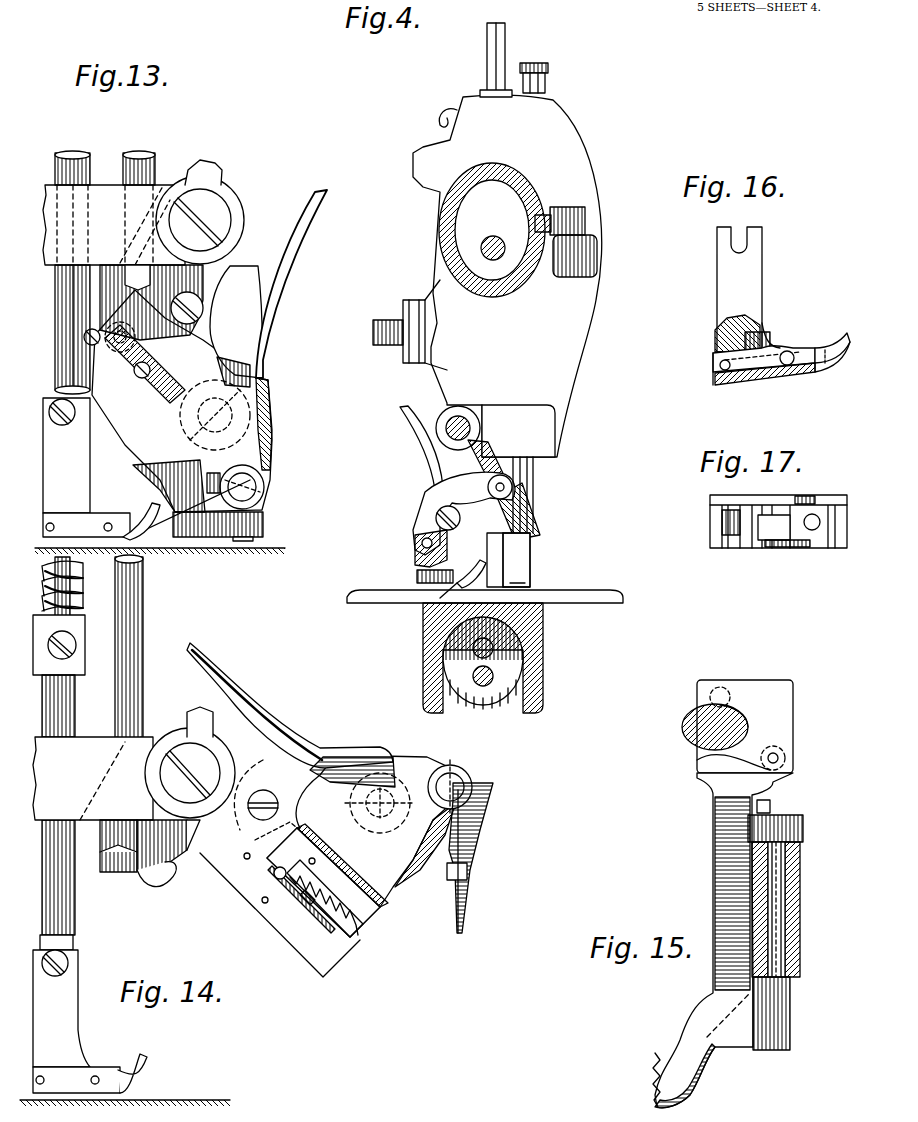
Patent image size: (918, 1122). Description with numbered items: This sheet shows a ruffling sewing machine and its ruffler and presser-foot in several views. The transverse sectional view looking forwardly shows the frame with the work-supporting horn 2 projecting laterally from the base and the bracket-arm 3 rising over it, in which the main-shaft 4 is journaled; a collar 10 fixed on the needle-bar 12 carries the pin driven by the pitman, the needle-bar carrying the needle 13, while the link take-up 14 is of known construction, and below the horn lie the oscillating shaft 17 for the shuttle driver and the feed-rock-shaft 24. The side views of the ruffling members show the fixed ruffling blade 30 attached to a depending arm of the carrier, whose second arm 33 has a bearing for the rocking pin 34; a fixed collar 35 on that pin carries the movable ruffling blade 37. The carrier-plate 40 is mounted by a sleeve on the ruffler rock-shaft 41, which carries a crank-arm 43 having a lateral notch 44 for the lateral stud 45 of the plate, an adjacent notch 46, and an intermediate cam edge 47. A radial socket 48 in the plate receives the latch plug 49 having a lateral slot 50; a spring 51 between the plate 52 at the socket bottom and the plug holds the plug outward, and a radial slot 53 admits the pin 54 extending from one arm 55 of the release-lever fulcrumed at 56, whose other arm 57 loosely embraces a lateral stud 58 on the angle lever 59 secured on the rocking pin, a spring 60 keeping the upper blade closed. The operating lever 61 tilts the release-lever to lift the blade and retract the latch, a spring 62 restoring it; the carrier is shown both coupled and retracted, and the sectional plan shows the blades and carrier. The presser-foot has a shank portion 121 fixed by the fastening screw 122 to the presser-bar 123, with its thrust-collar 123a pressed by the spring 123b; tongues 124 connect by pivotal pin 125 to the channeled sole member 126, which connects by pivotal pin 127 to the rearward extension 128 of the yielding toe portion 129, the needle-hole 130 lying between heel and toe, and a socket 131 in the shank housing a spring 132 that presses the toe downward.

In FIG. 4, the work-supporting horn 2 is at (545, 640).
In FIG. 4, the bracket-arm 3 is at (512, 172).
In FIG. 4, the main-shaft 4 is at (494, 236).
In FIG. 13, the collar 10 is at (182, 401).
In FIG. 14, the collar 10 is at (334, 831).
In FIG. 13, the needle-bar 12 is at (150, 163).
In FIG. 14, the needle-bar 12 is at (143, 645).
In FIG. 4, the needle-bar 12 is at (481, 60).
In FIG. 13, the needle 13 is at (203, 286).
In FIG. 4, the needle 13 is at (508, 560).
In FIG. 4, the link take-up 14 is at (436, 106).
In FIG. 4, the oscillating shaft 17 is at (494, 650).
In FIG. 4, the feed-rock-shaft 24 is at (494, 677).
In FIG. 13, the fixed ruffling blade 30 is at (163, 538).
In FIG. 14, the fixed ruffling blade 30 is at (478, 890).
In FIG. 4, the fixed ruffling blade 30 is at (447, 603).
In FIG. 15, the fixed ruffling blade 30 is at (713, 895).
In FIG. 15, the second arm 33 is at (798, 885).
In FIG. 15, the rocking pin 34 is at (798, 933).
In FIG. 15, the fixed collar 35 is at (773, 1050).
In FIG. 13, the movable ruffling blade 37 is at (158, 503).
In FIG. 14, the movable ruffling blade 37 is at (457, 910).
In FIG. 4, the movable ruffling blade 37 is at (473, 570).
In FIG. 15, the movable ruffling blade 37 is at (682, 728).
In FIG. 4, the carrier-plate 40 is at (497, 490).
In FIG. 4, the ruffler rock-shaft 41 is at (463, 416).
In FIG. 13, the crank-arm 43 is at (216, 326).
In FIG. 14, the crank-arm 43 is at (100, 860).
In FIG. 14, the lateral notch 44 is at (182, 847).
In FIG. 14, the lateral stud 45 is at (280, 805).
In FIG. 14, the notch 46 is at (130, 870).
In FIG. 14, the cam edge 47 is at (155, 890).
In FIG. 14, the radial socket 48 is at (300, 945).
In FIG. 13, the latch plug 49 is at (130, 340).
In FIG. 14, the latch plug 49 is at (270, 855).
In FIG. 13, the lateral slot 50 is at (117, 323).
In FIG. 14, the lateral slot 50 is at (274, 874).
In FIG. 14, the spring 51 is at (265, 880).
In FIG. 14, the plate 52 is at (372, 925).
In FIG. 4, the radial slot 53 is at (553, 495).
In FIG. 13, the pin 54 is at (145, 364).
In FIG. 4, the pin 54 is at (546, 495).
In FIG. 4, the arm 55 is at (464, 513).
In FIG. 4, the fulcrum 56 is at (416, 529).
In FIG. 4, the arm 57 is at (420, 528).
In FIG. 4, the lateral stud 58 is at (422, 546).
In FIG. 15, the lateral stud 58 is at (772, 806).
In FIG. 13, the angle lever 59 is at (262, 494).
In FIG. 14, the angle lever 59 is at (450, 787).
In FIG. 15, the angle lever 59 is at (787, 826).
In FIG. 13, the spring 60 is at (218, 485).
In FIG. 13, the operating lever 61 is at (270, 298).
In FIG. 14, the operating lever 61 is at (258, 722).
In FIG. 4, the operating lever 61 is at (420, 448).
In FIG. 14, the spring 62 is at (320, 768).
In FIG. 13, the shank portion 121 is at (86, 467).
In FIG. 14, the shank portion 121 is at (76, 1021).
In FIG. 4, the shank portion 121 is at (522, 560).
In FIG. 16, the shank portion 121 is at (739, 289).
In FIG. 17, the shank portion 121 is at (710, 528).
In FIG. 13, the fastening screw 122 is at (62, 426).
In FIG. 14, the fastening screw 122 is at (55, 977).
In FIG. 13, the presser-bar 123 is at (86, 162).
In FIG. 14, the presser-bar 123 is at (75, 683).
In FIG. 14, the thrust-collar 123a is at (85, 627).
In FIG. 14, the spring 123b is at (83, 598).
In FIG. 16, the tongues 124 is at (772, 347).
In FIG. 17, the tongues 124 is at (770, 505).
In FIG. 16, the pivotal pin 125 is at (792, 367).
In FIG. 16, the channeled sole member 126 is at (740, 383).
In FIG. 17, the channeled sole member 126 is at (790, 510).
In FIG. 16, the pivotal pin 127 is at (715, 368).
In FIG. 16, the rearward extension 128 is at (718, 360).
In FIG. 14, the yielding toe portion 129 is at (140, 1056).
In FIG. 16, the yielding toe portion 129 is at (840, 345).
In FIG. 16, the needle-hole 130 is at (843, 362).
In FIG. 17, the needle-hole 130 is at (818, 515).
In FIG. 16, the socket 131 is at (755, 322).
In FIG. 16, the spring 132 is at (760, 336).